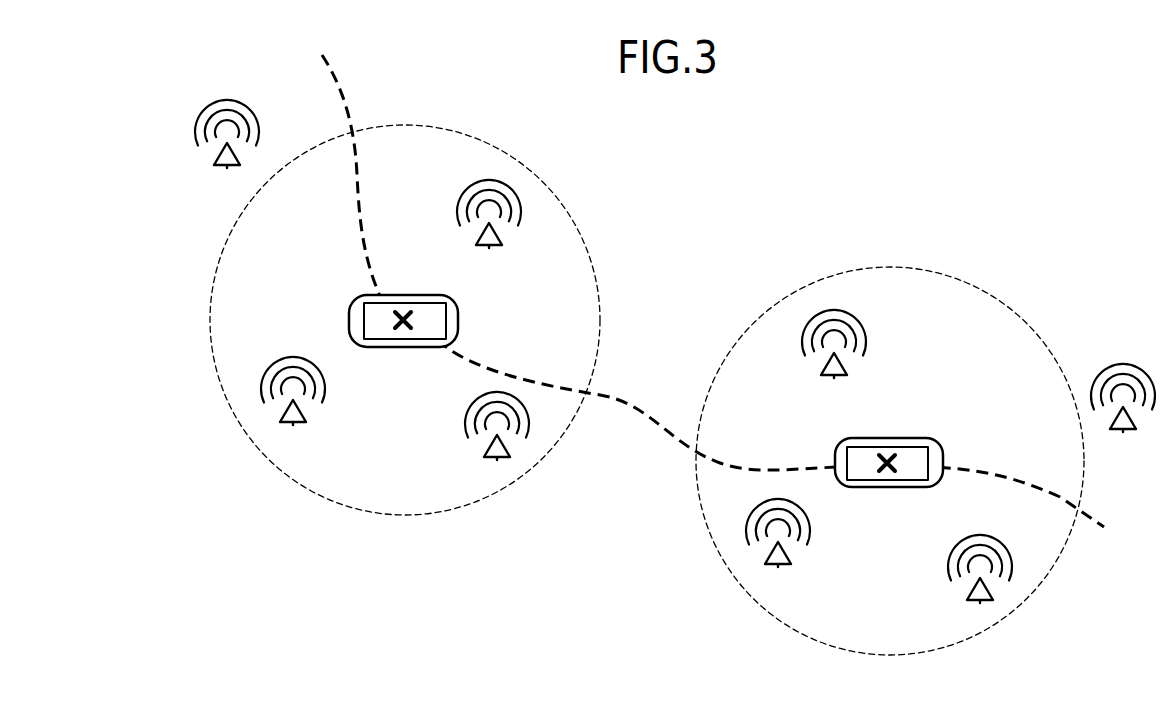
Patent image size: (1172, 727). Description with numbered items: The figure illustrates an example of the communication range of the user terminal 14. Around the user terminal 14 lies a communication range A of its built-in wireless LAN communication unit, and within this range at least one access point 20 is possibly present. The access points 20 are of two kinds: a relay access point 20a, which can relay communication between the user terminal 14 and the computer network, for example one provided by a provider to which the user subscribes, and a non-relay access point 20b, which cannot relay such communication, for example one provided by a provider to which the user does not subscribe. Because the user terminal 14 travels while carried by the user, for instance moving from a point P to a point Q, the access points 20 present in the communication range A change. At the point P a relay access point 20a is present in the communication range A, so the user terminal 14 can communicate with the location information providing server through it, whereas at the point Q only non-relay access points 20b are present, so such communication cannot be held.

The user terminal 14 is at (436, 347).
The access point 20 is at (138, 203).
The relay access point 20a is at (489, 248).
The non-relay access point 20b is at (227, 168).
The communication range A is at (547, 452).
The point P is at (404, 332).
The point Q is at (887, 476).